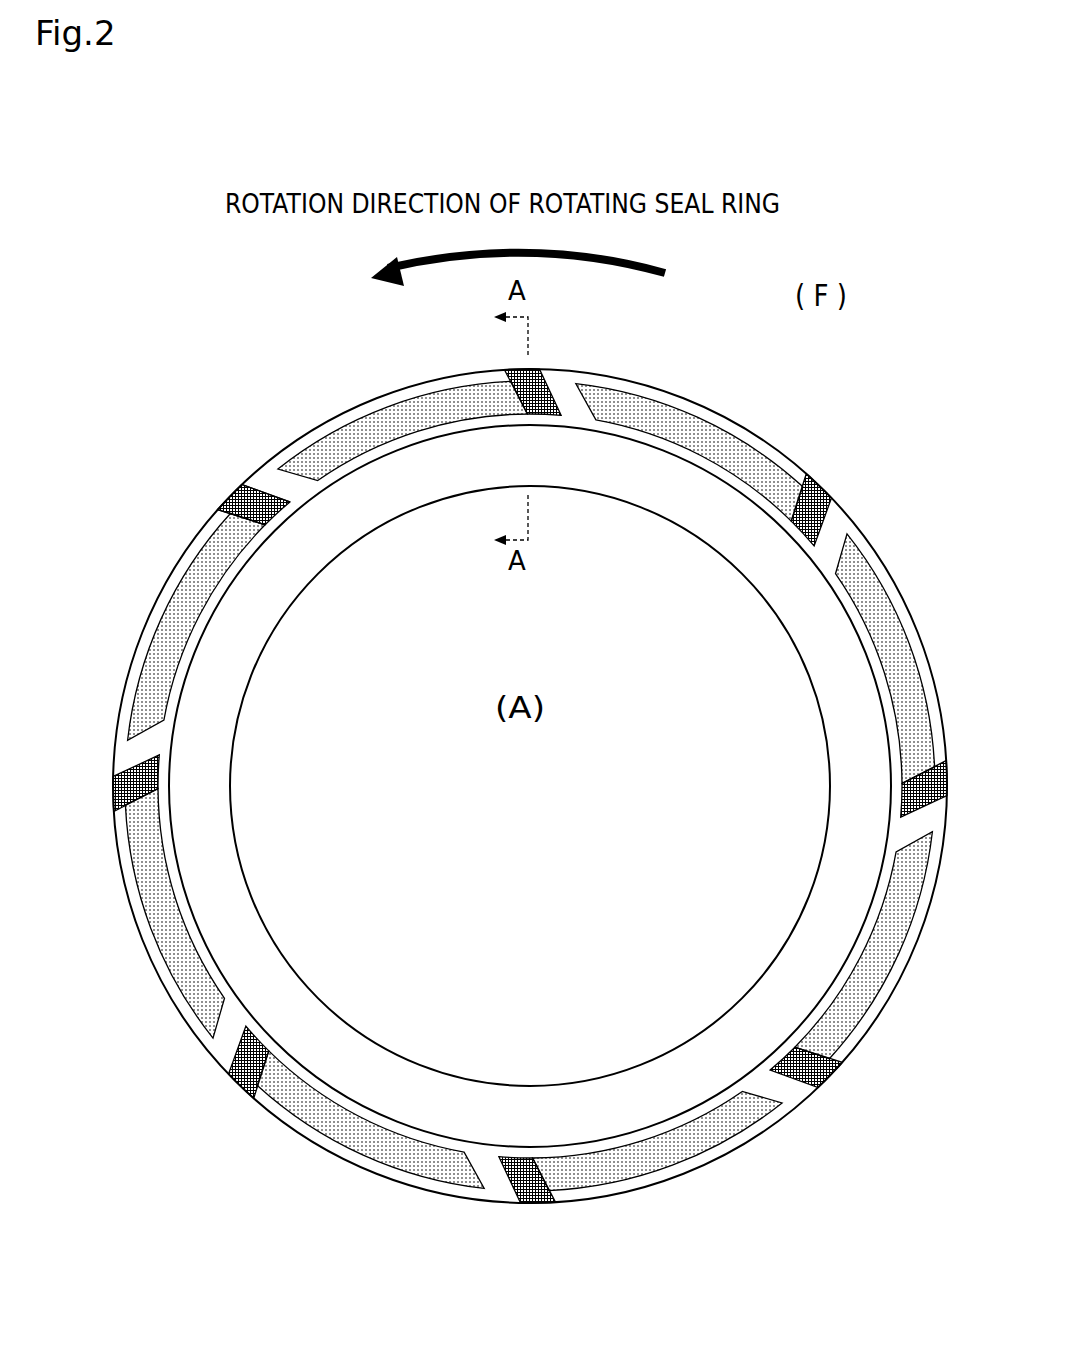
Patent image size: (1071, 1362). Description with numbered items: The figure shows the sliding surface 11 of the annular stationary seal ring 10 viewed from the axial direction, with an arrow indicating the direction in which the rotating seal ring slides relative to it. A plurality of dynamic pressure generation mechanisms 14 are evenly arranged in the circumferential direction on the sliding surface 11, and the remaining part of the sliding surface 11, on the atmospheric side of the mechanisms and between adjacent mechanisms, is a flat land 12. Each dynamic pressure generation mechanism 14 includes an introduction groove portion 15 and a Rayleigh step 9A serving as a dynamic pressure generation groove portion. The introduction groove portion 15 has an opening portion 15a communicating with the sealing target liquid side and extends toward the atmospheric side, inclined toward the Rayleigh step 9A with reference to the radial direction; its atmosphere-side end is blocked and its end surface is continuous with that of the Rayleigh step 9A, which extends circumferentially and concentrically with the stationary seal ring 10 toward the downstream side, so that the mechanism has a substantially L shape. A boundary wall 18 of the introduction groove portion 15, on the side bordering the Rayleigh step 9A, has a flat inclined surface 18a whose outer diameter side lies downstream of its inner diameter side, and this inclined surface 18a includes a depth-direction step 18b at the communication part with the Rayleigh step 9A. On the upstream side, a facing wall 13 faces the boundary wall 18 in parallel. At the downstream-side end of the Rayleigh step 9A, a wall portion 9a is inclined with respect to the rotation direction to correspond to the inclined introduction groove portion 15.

The stationary seal ring 10 is at (792, 421).
The sliding surface 11 is at (797, 583).
The land 12 is at (832, 640).
The wall portion 9a is at (140, 690).
The Rayleigh step 9A is at (186, 597).
The dynamic pressure generation mechanism 14 is at (412, 563).
The introduction groove portion 15 is at (220, 486).
The opening portion 15a is at (219, 485).
The facing wall 13 is at (241, 487).
The boundary wall 18 is at (160, 490).
The inclined surface 18a is at (216, 503).
The depth-direction step 18b is at (215, 517).